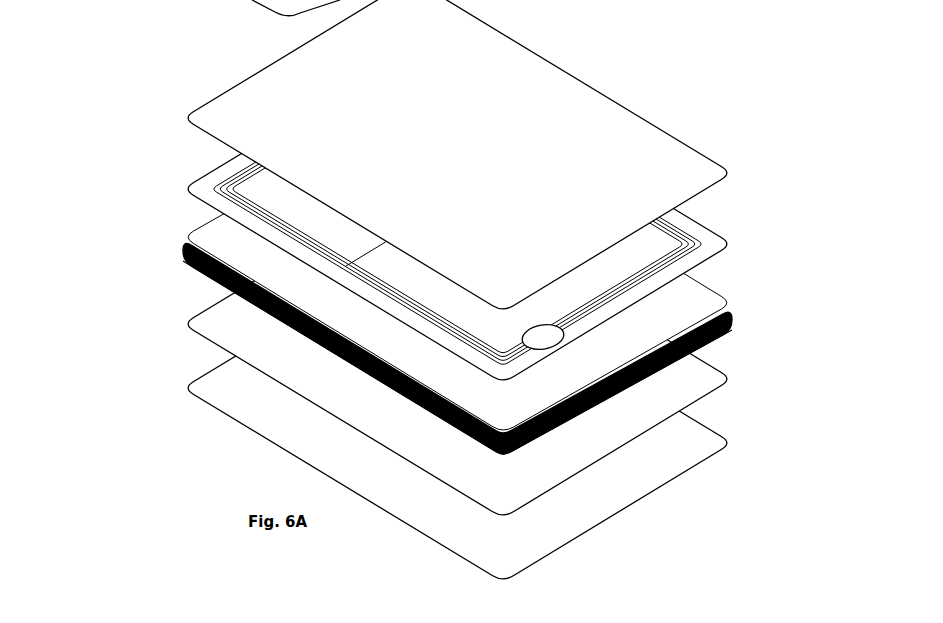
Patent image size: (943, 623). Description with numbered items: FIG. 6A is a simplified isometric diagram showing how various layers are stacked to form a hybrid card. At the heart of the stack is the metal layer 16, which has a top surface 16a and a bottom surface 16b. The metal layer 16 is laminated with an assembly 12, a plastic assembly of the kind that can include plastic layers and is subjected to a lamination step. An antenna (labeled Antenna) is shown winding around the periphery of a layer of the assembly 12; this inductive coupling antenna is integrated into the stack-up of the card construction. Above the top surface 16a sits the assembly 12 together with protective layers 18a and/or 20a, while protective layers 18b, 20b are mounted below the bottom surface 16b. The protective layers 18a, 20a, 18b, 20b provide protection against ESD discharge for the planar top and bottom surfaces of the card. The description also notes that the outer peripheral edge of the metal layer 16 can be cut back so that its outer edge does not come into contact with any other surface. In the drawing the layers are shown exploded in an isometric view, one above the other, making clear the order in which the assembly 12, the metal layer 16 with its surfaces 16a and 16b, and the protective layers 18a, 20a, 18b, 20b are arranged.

The assembly 12 is at (421, 216).
The metal layer 16 is at (716, 330).
The top surface 16a is at (703, 298).
The bottom surface 16b is at (703, 344).
The protective layer 18a is at (510, 154).
The protective layer 20a is at (702, 174).
The protective layer 18b is at (707, 401).
The protective layer 20b is at (702, 460).
The antenna Antenna is at (214, 189).